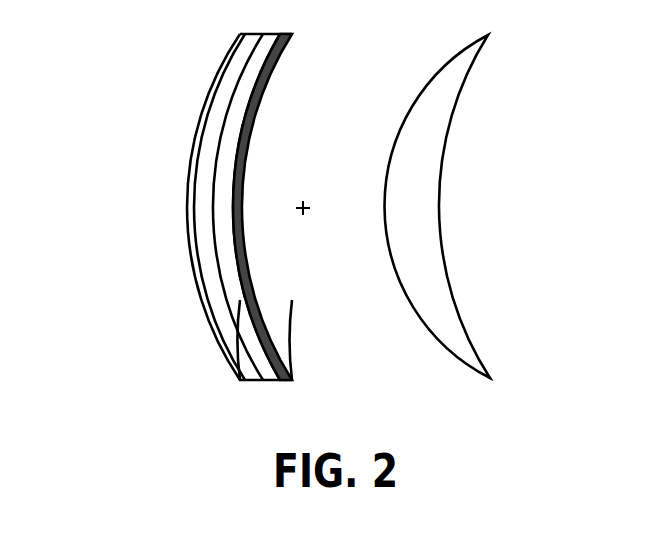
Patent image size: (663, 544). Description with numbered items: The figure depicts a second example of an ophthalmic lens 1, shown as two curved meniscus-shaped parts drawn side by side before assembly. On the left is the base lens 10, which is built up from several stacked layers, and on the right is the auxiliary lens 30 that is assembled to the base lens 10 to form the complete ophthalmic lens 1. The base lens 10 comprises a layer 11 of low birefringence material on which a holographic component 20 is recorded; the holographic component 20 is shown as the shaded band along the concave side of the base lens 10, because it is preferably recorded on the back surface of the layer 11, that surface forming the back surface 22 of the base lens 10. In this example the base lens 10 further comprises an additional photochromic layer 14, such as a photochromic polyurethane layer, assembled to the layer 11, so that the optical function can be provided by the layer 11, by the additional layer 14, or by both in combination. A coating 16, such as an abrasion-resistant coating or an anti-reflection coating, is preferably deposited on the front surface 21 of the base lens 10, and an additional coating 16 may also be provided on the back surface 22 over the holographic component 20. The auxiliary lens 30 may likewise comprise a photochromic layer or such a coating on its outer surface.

The ophthalmic lens 1 is at (145, 69).
The base lens 10 is at (196, 399).
The layer of low birefringence material 11 is at (229, 150).
The additional photochromic layer 14 is at (202, 205).
The coating 16 is at (195, 268).
The holographic component 20 is at (262, 87).
The front surface of the base lens 21 is at (196, 333).
The back surface of the base lens 22 is at (293, 350).
The auxiliary lens 30 is at (423, 173).